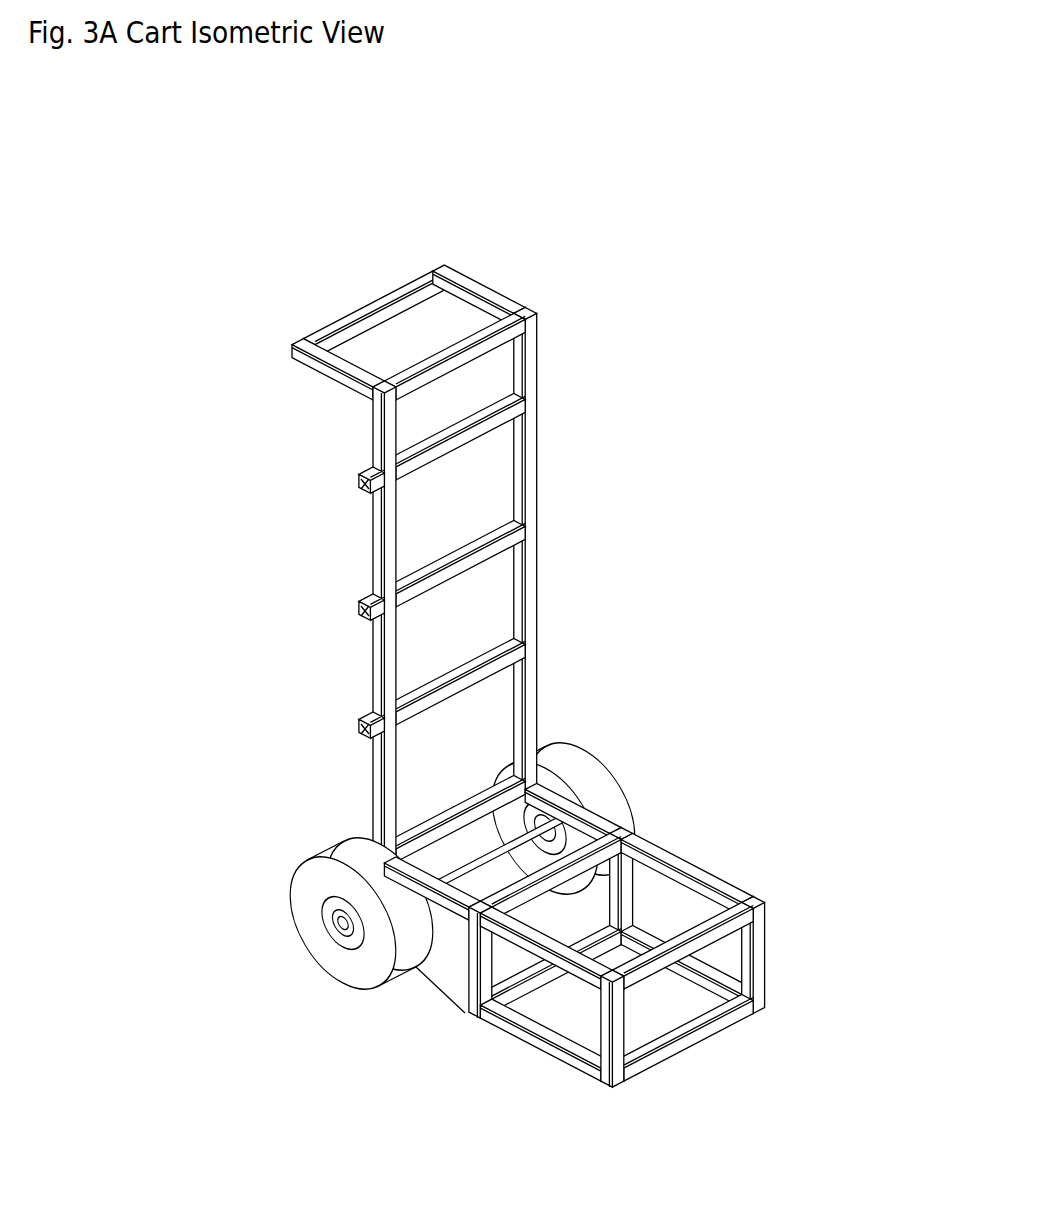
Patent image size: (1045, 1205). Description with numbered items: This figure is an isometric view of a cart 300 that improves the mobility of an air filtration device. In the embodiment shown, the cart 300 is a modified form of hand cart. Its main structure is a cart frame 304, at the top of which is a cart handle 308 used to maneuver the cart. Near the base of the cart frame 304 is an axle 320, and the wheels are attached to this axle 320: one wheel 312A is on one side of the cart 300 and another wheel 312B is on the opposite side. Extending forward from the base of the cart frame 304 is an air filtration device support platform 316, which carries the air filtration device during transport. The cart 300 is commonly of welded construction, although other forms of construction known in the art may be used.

The cart 300 is at (876, 102).
The cart frame 304 is at (374, 525).
The cart handle 308 is at (363, 322).
The wheel 312A is at (302, 900).
The wheel 312B is at (567, 778).
The air filtration device support platform 316 is at (708, 873).
The axle 320 is at (462, 864).